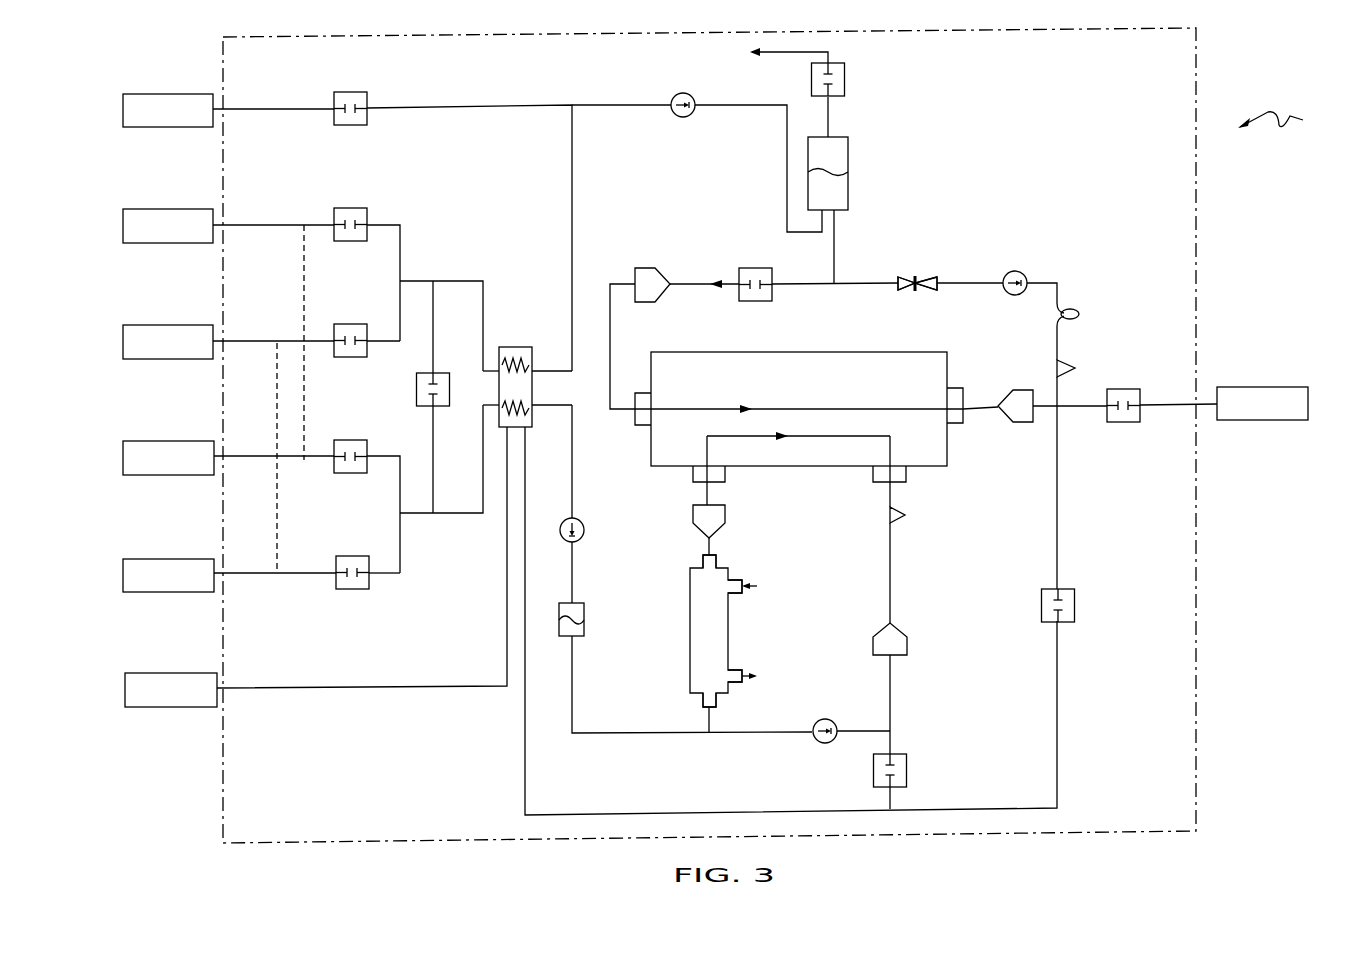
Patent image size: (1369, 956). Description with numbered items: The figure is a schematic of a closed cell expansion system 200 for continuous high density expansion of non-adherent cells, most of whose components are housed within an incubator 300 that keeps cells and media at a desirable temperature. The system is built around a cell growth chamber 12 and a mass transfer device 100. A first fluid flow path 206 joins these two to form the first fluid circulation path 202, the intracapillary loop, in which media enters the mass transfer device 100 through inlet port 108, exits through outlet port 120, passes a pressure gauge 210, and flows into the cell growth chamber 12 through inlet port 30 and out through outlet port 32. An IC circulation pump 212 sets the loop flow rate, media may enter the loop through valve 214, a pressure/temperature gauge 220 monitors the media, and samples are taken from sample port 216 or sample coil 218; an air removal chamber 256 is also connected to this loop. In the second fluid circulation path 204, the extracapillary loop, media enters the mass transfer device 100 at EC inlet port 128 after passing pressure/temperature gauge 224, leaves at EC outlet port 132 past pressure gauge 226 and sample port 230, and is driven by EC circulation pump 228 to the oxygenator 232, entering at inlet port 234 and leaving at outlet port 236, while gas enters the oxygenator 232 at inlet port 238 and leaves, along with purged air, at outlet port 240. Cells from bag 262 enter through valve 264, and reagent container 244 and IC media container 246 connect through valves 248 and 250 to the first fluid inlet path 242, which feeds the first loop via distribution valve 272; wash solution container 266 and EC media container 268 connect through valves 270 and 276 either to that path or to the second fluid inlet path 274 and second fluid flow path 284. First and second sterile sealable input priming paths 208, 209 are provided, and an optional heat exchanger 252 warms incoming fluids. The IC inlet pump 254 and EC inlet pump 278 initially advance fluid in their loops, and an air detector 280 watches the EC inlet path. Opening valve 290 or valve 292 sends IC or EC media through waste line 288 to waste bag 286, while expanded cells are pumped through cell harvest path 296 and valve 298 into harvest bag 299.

The incubator 300 is at (578, 37).
The cell expansion system 200 is at (1287, 120).
The bag 262 is at (124, 95).
The valve 264 is at (334, 122).
The first fluid flow path 206 is at (578, 108).
The IC inlet pump 254 is at (694, 113).
The air removal chamber 256 is at (845, 137).
The fluid container 244 is at (124, 210).
The valve 248 is at (367, 209).
The first sterile sealable input priming path 208 is at (305, 312).
The first fluid inlet path 242 is at (445, 281).
The fluid container 246 is at (124, 326).
The valve 250 is at (367, 355).
The heat exchanger 252 is at (510, 347).
The distribution valve 272 is at (417, 402).
The second sterile sealable input priming path 209 is at (277, 412).
The fluid container 266 is at (124, 442).
The valve 270 is at (334, 472).
The second fluid inlet path 274 is at (446, 514).
The fluid container 268 is at (124, 560).
The valve 276 is at (336, 588).
The waste bag 286 is at (126, 674).
The waste line 288 is at (1059, 680).
The EC inlet pump 278 is at (583, 523).
The air detector 280 is at (585, 610).
The second fluid flow path 284 is at (573, 692).
The EC circulation pump 228 is at (814, 741).
The first fluid circulation path 202 is at (611, 350).
The pressure/temperature gauge 220 is at (656, 269).
The valve 214 is at (772, 274).
The cell growth chamber 12 is at (917, 274).
The outlet port 32 is at (898, 280).
The inlet port 30 is at (938, 283).
The IC circulation pump 212 is at (1025, 274).
The sample coil 218 is at (1079, 312).
The sample port 216 is at (1073, 367).
The valve 290 is at (1073, 588).
The mass transfer device 100 is at (803, 348).
The inlet port 108 is at (640, 427).
The outlet port 120 is at (960, 424).
The pressure gauge 210 is at (1010, 390).
The cell harvest path 296 is at (1080, 408).
The valve 298 is at (1140, 390).
The harvest bag 299 is at (1300, 388).
The EC inlet port 128 is at (728, 480).
The EC outlet port 132 is at (870, 479).
The sample port 230 is at (904, 511).
The second fluid circulation path 204 is at (890, 592).
The pressure gauge 226 is at (907, 646).
The valve 292 is at (874, 786).
The pressure/temperature gauge 224 is at (727, 520).
The oxygenator 232 is at (734, 632).
The outlet port 236 is at (703, 563).
The inlet port 234 is at (703, 704).
The inlet port 238 is at (742, 594).
The outlet port 240 is at (742, 684).